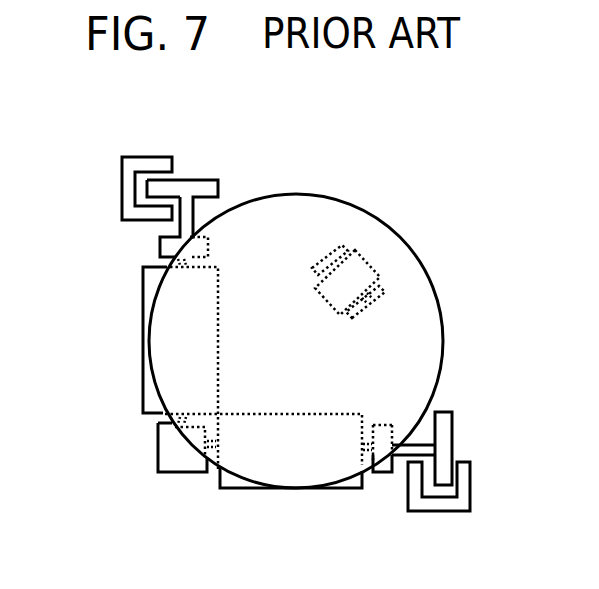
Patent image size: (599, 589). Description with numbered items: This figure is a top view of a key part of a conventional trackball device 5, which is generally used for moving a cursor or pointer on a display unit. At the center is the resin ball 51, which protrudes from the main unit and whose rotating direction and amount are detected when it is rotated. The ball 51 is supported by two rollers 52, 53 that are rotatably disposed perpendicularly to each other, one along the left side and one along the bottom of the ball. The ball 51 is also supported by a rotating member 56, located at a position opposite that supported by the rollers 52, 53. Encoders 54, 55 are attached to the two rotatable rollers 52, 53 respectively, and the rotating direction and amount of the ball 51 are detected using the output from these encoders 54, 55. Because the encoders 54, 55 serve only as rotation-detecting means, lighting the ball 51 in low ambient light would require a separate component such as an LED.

The trackball device 5 is at (447, 192).
The ball 51 is at (270, 222).
The roller 52 is at (150, 398).
The roller 53 is at (350, 488).
The encoder 54 is at (112, 147).
The encoder 55 is at (482, 516).
The rotating member 56 is at (362, 272).